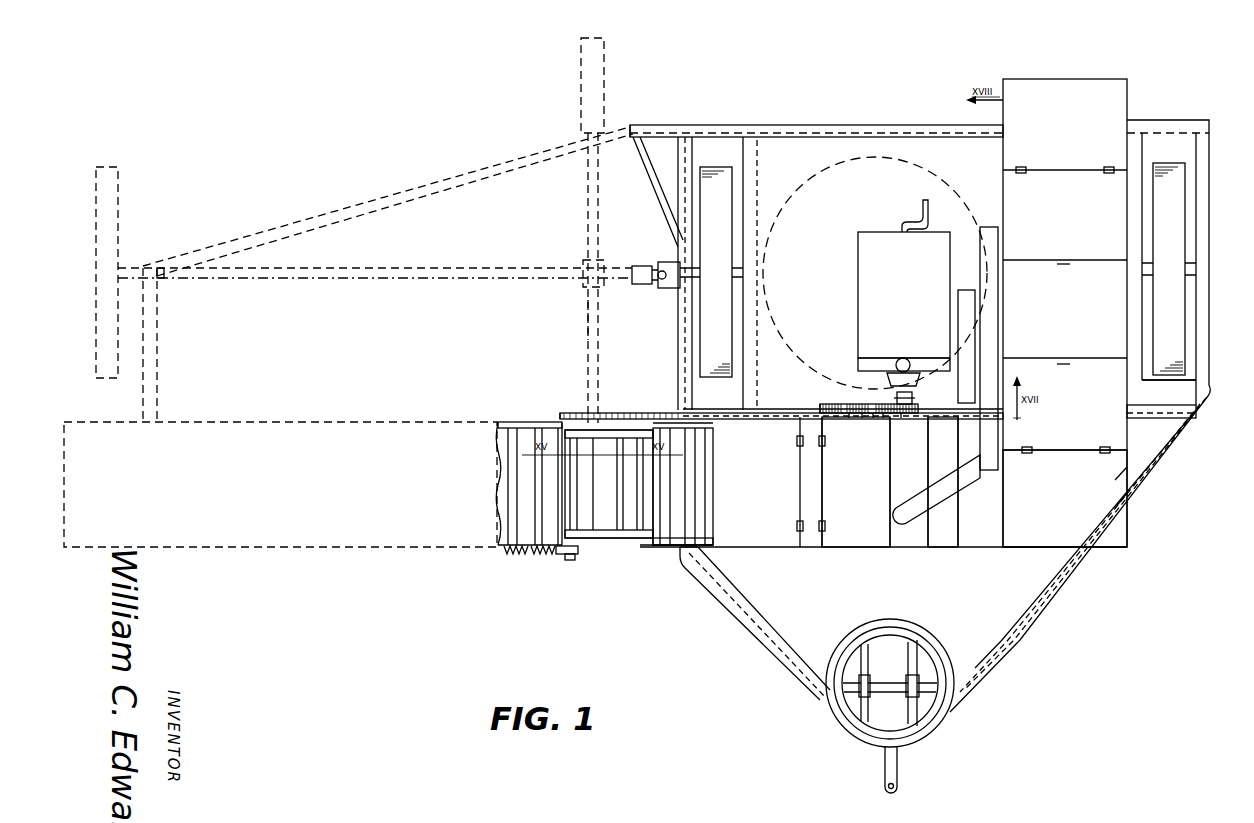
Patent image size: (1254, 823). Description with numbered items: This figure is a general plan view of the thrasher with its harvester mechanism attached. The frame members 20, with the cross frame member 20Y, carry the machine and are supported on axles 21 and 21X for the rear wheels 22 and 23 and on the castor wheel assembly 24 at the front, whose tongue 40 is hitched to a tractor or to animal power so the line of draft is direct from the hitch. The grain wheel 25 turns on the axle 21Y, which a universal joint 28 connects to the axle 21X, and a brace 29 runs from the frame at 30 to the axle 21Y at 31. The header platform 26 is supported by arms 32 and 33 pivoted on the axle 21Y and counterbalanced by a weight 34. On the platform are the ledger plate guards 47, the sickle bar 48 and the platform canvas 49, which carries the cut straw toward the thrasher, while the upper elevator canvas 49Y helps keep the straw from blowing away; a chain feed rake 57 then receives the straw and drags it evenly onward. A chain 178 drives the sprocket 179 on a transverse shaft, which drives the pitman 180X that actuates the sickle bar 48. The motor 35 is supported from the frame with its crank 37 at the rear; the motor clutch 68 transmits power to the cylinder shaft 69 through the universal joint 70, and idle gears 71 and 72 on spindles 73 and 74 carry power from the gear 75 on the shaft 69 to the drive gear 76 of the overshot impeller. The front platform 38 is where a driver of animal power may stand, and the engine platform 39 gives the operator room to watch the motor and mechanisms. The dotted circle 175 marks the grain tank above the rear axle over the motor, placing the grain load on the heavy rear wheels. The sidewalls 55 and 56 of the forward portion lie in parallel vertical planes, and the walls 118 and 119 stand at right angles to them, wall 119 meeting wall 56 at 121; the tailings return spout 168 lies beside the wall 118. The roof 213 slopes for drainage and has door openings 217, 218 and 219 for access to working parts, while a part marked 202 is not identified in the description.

The frame members 20 is at (752, 396).
The cross frame member 20Y is at (948, 130).
The axle 21 is at (1197, 268).
The axle 21X is at (696, 282).
The axle 21Y is at (316, 270).
The rear wheel 22 is at (1168, 269).
The rear wheel 23 is at (716, 272).
The castor wheel assembly 24 is at (890, 683).
The grain wheel 25 is at (100, 328).
The header platform 26 is at (280, 484).
The universal joint 28 is at (657, 262).
The brace 29 is at (402, 194).
The frame connection point 30 is at (632, 128).
The axle connection point 31 is at (163, 280).
The arm 32 is at (160, 354).
The arm 33 is at (592, 318).
The weight 34 is at (584, 80).
The motor 35 is at (904, 302).
The crank 37 is at (915, 206).
The front platform 38 is at (782, 574).
The engine platform 39 is at (963, 166).
The tongue 40 is at (898, 772).
The ledger plate guards 47 is at (507, 556).
The sickle bar 48 is at (541, 556).
The platform canvas 49 is at (529, 483).
The upper elevator canvas 49Y is at (609, 484).
The sidewall 55 is at (738, 418).
The sidewall 56 is at (738, 547).
The chain feed rake 57 is at (700, 495).
The motor clutch 68 is at (921, 381).
The cylinder shaft 69 is at (920, 410).
The universal joint 70 is at (897, 397).
The idle gear 71 is at (873, 418).
The idle gear 72 is at (849, 418).
The spindle 73 is at (883, 418).
The spindle 74 is at (862, 418).
The gear 75 is at (901, 418).
The drive gear 76 is at (840, 404).
The wall 118 is at (1000, 320).
The wall 119 is at (1131, 490).
The intersection 121 is at (1128, 530).
The return spout 168 is at (936, 489).
The grain tank 175 is at (815, 186).
The chain 178 is at (658, 390).
The sprocket 179 is at (575, 410).
The pitman 180X is at (562, 560).
The housing bottom 202 is at (1192, 408).
The roof 213 is at (1065, 313).
The door opening 217 is at (856, 482).
The door opening 218 is at (940, 482).
The door opening 219 is at (1065, 498).